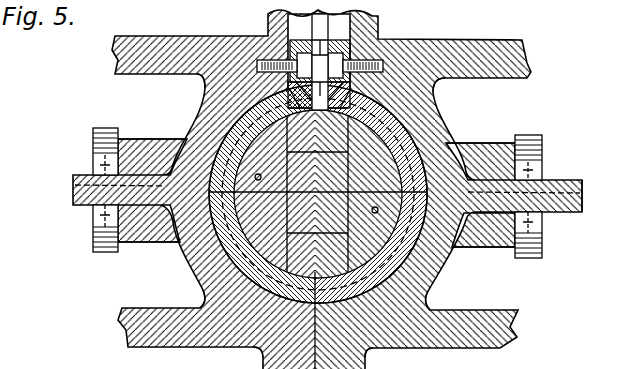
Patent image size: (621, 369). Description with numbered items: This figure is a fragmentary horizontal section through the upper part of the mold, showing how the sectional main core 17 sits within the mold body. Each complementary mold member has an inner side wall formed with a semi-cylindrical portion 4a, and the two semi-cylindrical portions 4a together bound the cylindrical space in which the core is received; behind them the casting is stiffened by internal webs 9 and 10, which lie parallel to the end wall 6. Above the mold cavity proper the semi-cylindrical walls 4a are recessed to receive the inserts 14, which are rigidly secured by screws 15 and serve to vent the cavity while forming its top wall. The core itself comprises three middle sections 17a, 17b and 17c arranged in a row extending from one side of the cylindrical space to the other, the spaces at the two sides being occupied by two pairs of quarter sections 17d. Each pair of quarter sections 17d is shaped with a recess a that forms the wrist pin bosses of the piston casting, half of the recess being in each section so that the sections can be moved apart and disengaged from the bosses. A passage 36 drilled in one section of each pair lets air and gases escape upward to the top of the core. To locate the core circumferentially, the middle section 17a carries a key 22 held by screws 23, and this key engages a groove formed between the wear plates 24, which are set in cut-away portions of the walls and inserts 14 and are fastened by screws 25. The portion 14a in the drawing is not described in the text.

The internal web 9 is at (184, 38).
The internal web 10 is at (80, 175).
The semi-cylindrical portion 4a is at (190, 270).
The insert 14 is at (212, 141).
The seat ring flange 14a is at (152, 190).
The recess a is at (308, 194).
The end wall 6 is at (330, 179).
The screw 15 is at (205, 100).
The passage 36 is at (318, 194).
The main core 17 is at (318, 194).
The middle core section 17a is at (321, 190).
The middle core section 17b is at (317, 172).
The middle core section 17c is at (317, 301).
The quarter section 17d is at (366, 193).
The wear plate 24 is at (268, 33).
The key 22 is at (301, 62).
The screw 23 is at (348, 96).
The screw 25 is at (257, 66).